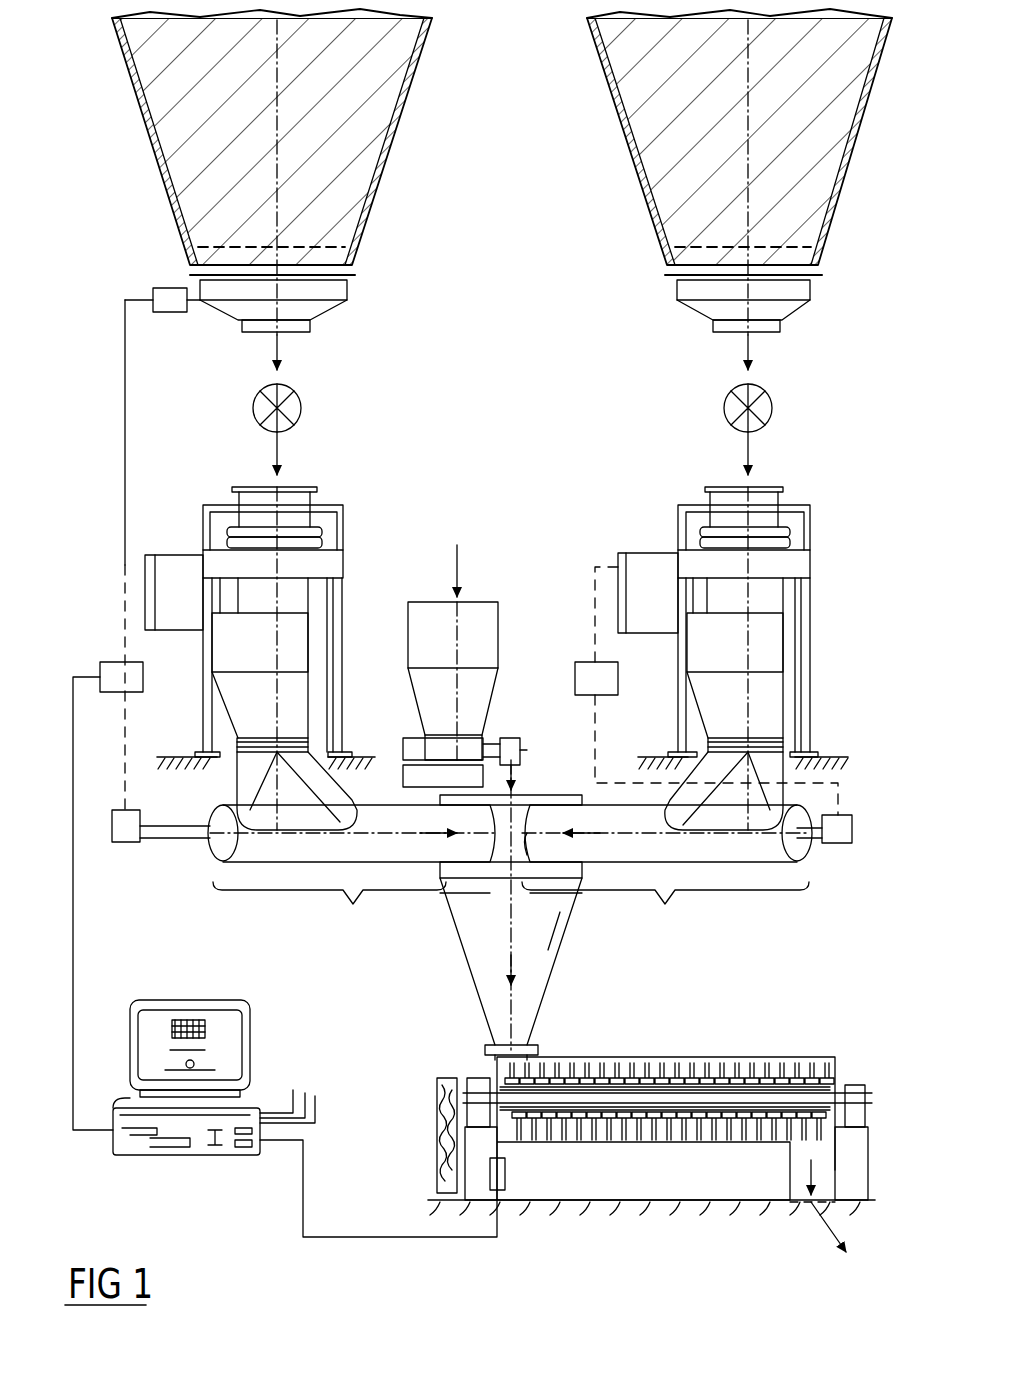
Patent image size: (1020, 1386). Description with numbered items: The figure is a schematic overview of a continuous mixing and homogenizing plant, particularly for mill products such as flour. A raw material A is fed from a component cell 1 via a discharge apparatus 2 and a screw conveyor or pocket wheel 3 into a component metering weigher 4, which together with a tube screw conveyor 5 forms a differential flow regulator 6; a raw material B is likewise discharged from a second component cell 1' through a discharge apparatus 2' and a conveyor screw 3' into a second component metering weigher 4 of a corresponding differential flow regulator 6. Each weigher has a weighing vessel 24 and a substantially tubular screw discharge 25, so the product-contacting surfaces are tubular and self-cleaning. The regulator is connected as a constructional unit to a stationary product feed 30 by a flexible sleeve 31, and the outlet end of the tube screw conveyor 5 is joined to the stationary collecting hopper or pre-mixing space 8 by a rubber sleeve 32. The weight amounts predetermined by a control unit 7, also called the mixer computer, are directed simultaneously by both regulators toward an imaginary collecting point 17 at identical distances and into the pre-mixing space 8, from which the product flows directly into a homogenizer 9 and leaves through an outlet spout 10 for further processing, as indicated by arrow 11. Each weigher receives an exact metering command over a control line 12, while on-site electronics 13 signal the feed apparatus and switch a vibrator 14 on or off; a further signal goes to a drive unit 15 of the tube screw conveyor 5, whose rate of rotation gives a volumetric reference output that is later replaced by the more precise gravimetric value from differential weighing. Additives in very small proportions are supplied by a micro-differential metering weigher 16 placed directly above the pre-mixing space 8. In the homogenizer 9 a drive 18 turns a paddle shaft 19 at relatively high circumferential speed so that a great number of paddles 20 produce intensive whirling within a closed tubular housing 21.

The component cell 1 is at (284, 137).
The second component cell 1' is at (715, 137).
The discharge apparatus 2 is at (322, 309).
The discharge apparatus 2' is at (693, 309).
The screw conveyor or pocket wheel 3 is at (348, 405).
The conveyor screw 3' is at (678, 405).
The component metering weigher 4 is at (208, 485).
The tube screw conveyor 5 is at (313, 848).
The differential flow regulator 6 is at (155, 736).
The control unit 7 is at (225, 990).
The pre-mixing space 8 is at (545, 982).
The homogenizer 9 is at (632, 1050).
The outlet spout 10 is at (825, 1170).
The arrow 11 is at (826, 1233).
The control line 12 is at (72, 968).
The on-site electronics 13 is at (145, 566).
The vibrator 14 is at (158, 290).
The drive unit 15 is at (128, 852).
The micro-differential metering weigher 16 is at (520, 550).
The collecting point 17 is at (512, 833).
The drive 18 is at (436, 1100).
The paddle shaft 19 is at (838, 1090).
The paddles 20 is at (770, 1065).
The closed tubular housing 21 is at (672, 1057).
The weighing vessel 24 is at (260, 642).
The screw discharge 25 is at (198, 861).
The stationary product feed 30 is at (765, 505).
The flexible sleeve 31 is at (790, 540).
The rubber sleeve 32 is at (528, 860).